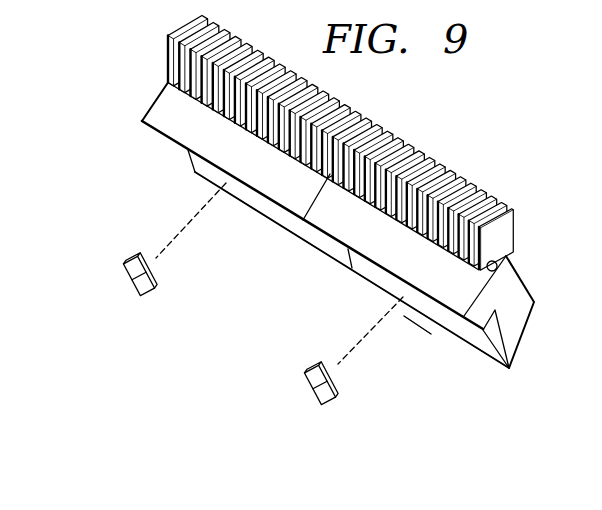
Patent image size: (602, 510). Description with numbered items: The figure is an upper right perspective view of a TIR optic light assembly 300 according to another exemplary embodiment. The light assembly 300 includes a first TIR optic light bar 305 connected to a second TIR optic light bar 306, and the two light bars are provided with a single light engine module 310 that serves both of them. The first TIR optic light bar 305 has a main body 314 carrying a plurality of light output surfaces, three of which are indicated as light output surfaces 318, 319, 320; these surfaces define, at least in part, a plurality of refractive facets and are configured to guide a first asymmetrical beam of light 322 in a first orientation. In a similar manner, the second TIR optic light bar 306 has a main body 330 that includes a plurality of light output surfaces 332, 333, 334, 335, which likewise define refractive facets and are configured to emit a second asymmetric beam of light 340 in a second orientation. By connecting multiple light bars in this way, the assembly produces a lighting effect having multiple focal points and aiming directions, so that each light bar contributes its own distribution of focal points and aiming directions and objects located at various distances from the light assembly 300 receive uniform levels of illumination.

The TIR optic light assembly 300 is at (126, 358).
The first TIR optic light bar 305 is at (186, 193).
The second TIR optic light bar 306 is at (430, 352).
The light engine module 310 is at (542, 201).
The main body 314 is at (170, 90).
The light output surface 318 is at (158, 112).
The light output surface 319 is at (162, 134).
The light output surface 320 is at (298, 224).
The first asymmetrical beam of light 322 is at (180, 264).
The main body 330 is at (508, 290).
The light output surface 332 is at (337, 232).
The light output surface 333 is at (484, 328).
The light output surface 334 is at (380, 283).
The light output surface 335 is at (522, 333).
The second asymmetric beam of light 340 is at (352, 362).